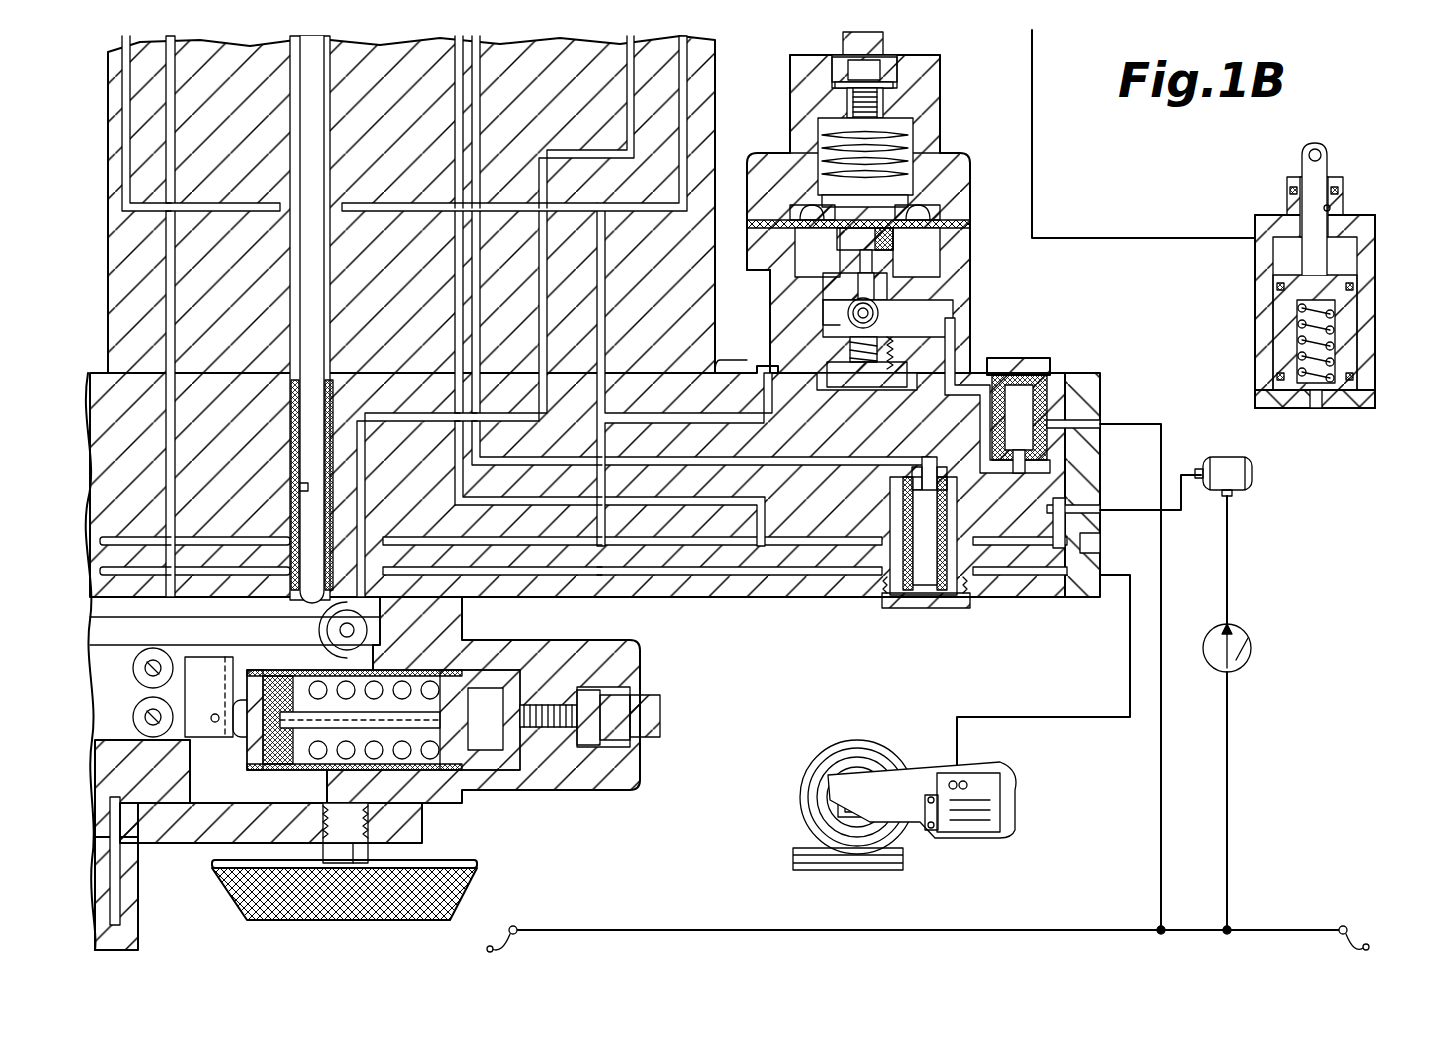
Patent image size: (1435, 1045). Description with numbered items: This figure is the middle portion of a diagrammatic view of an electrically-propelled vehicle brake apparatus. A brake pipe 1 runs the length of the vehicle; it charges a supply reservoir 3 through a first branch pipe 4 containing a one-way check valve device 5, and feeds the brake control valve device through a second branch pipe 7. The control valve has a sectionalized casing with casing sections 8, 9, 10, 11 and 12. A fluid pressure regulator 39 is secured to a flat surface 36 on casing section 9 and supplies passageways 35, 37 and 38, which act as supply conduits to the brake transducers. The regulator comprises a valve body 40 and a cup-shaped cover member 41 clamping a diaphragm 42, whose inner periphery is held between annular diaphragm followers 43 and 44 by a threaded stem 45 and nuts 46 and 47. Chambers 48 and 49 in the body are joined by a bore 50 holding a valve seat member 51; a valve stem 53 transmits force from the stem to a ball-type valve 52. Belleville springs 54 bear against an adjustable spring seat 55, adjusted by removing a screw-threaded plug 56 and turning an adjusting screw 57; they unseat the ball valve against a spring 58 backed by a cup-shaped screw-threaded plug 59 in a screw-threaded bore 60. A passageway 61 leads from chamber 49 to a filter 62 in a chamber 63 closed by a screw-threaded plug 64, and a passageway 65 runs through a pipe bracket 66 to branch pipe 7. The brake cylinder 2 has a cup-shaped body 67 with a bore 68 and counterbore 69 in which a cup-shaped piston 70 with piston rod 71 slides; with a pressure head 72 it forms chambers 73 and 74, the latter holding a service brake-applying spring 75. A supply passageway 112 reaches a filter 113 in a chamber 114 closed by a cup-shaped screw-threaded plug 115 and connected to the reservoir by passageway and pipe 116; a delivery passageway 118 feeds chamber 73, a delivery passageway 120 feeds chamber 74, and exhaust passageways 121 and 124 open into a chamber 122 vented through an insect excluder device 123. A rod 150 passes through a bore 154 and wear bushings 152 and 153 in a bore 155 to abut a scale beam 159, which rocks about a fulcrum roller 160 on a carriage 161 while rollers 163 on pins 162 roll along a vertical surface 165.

The brake pipe 1 is at (1058, 930).
The brake cylinder 2 is at (1255, 333).
The supply reservoir 3 is at (1218, 457).
The first branch pipe 4 is at (1229, 735).
The one-way check valve device 5 is at (1244, 634).
The second branch pipe 7 is at (1158, 835).
The casing section 8 is at (108, 148).
The casing section 9 is at (92, 505).
The casing section 10 is at (462, 620).
The casing section 11 is at (110, 777).
The casing section 12 is at (105, 885).
The passageway 35 is at (603, 212).
The flat surface 36 is at (733, 373).
The passageway 37 is at (408, 212).
The passageway 38 is at (605, 483).
The fluid pressure regulator 39 is at (942, 70).
The valve body 40 is at (953, 258).
The cup-shaped cover member 41 is at (920, 97).
The diaphragm 42 is at (940, 215).
The annular diaphragm follower 43 is at (937, 200).
The annular diaphragm follower 44 is at (897, 235).
The threaded stem 45 is at (907, 195).
The nut 46 is at (813, 205).
The nut 47 is at (847, 242).
The chamber 48 is at (927, 270).
The chamber 49 is at (950, 308).
The bore 50 is at (886, 313).
The valve seat member 51 is at (853, 285).
The ball-type valve 52 is at (845, 310).
The valve stem 53 is at (860, 267).
The Belleville springs 54 is at (827, 177).
The adjustable spring seat 55 is at (840, 150).
The screw-threaded plug 56 is at (883, 40).
The adjusting screw 57 is at (850, 100).
The spring 58 is at (853, 348).
The cup-shaped screw-threaded plug 59 is at (850, 387).
The screw-threaded bore 60 is at (893, 357).
The passageway 61 is at (955, 348).
The filter 62 is at (1000, 413).
The chamber 63 is at (1038, 443).
The screw-threaded plug 64 is at (1023, 368).
The passageway 65 is at (1080, 410).
The pipe bracket 66 is at (1087, 388).
The cup-shaped body 67 is at (1367, 283).
The bore 68 is at (1330, 208).
The counterbore 69 is at (1353, 317).
The cup-shaped piston 70 is at (1350, 358).
The piston rod 71 is at (1322, 163).
The pressure head 72 is at (1347, 397).
The chamber 73 is at (1347, 248).
The chamber 74 is at (1300, 352).
The service brake-applying spring 75 is at (1333, 343).
The supply passageway 112 is at (480, 312).
The filter 113 is at (903, 500).
The chamber 114 is at (898, 520).
The cup-shaped screw-threaded plug 115 is at (923, 600).
The passageway and pipe 116 is at (1068, 497).
The delivery passageway 118 is at (1200, 237).
The delivery passageway 120 is at (753, 502).
The exhaust passageway 121 is at (172, 415).
The chamber 122 is at (250, 800).
The insect excluder device 123 is at (440, 893).
The exhaust passageway 124 is at (543, 330).
The rod 150 is at (307, 463).
The wear bushing 152 is at (293, 435).
The wear bushing 153 is at (293, 535).
The bore 154 is at (324, 262).
The bore 155 is at (298, 487).
The scale beam 159 is at (230, 630).
The roller 160 is at (150, 675).
The carriage 161 is at (193, 740).
The pin 162 is at (355, 630).
The roller 163 is at (364, 618).
The vertical surface 165 is at (350, 660).